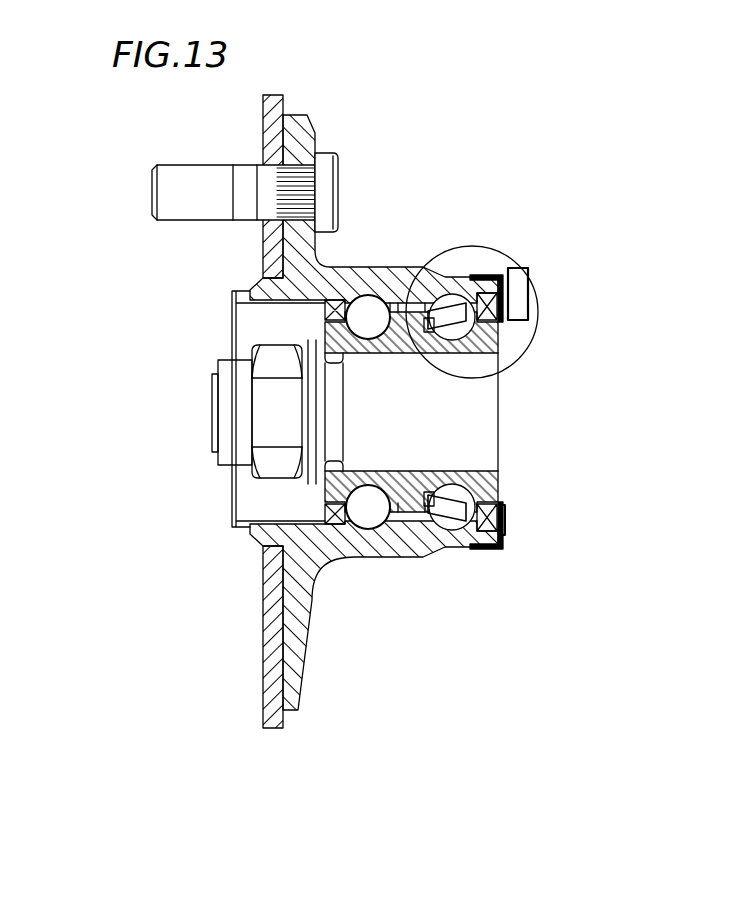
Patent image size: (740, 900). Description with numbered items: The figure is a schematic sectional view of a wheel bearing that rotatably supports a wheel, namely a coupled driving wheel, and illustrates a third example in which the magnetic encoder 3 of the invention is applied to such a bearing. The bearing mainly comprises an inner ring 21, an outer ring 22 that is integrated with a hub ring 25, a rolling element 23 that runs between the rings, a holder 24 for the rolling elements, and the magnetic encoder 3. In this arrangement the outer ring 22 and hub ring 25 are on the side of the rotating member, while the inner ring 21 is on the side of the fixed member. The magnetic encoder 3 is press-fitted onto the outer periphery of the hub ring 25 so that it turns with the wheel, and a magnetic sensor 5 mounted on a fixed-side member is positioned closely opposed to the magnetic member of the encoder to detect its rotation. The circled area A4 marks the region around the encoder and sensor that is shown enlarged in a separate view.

The outer ring 22 is at (384, 270).
The hub ring 25 is at (397, 547).
The rolling element 23 is at (492, 338).
The inner ring 21 is at (461, 333).
The holder 24 is at (447, 315).
The magnetic encoder 3 is at (485, 268).
The magnetic sensor 5 is at (522, 288).
The area A4 is at (538, 328).